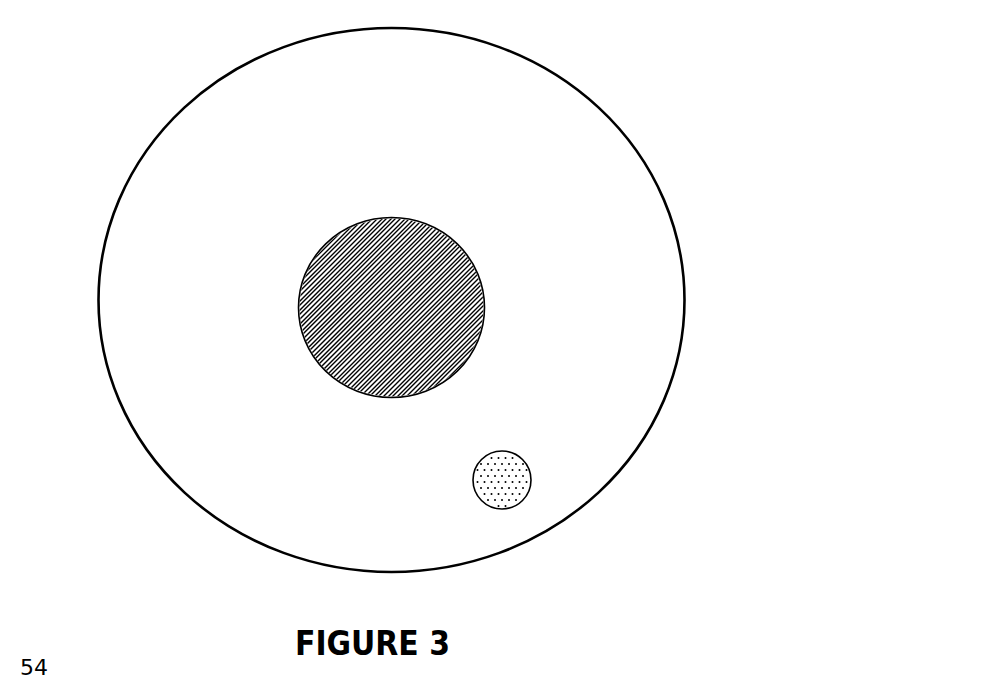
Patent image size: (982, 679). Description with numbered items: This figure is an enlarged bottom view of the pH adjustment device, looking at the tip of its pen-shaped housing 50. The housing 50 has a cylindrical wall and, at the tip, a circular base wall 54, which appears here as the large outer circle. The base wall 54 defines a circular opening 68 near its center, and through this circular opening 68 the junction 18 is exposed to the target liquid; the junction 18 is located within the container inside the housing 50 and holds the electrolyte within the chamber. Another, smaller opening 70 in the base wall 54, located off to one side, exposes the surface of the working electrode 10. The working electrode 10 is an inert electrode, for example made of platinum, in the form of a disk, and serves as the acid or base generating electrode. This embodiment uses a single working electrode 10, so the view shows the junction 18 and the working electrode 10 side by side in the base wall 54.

The housing 50 is at (97, 277).
The circular base wall 54 is at (202, 468).
The circular opening 68 is at (308, 262).
The junction 18 is at (452, 268).
The opening 70 is at (532, 462).
The working electrode 10 is at (510, 482).